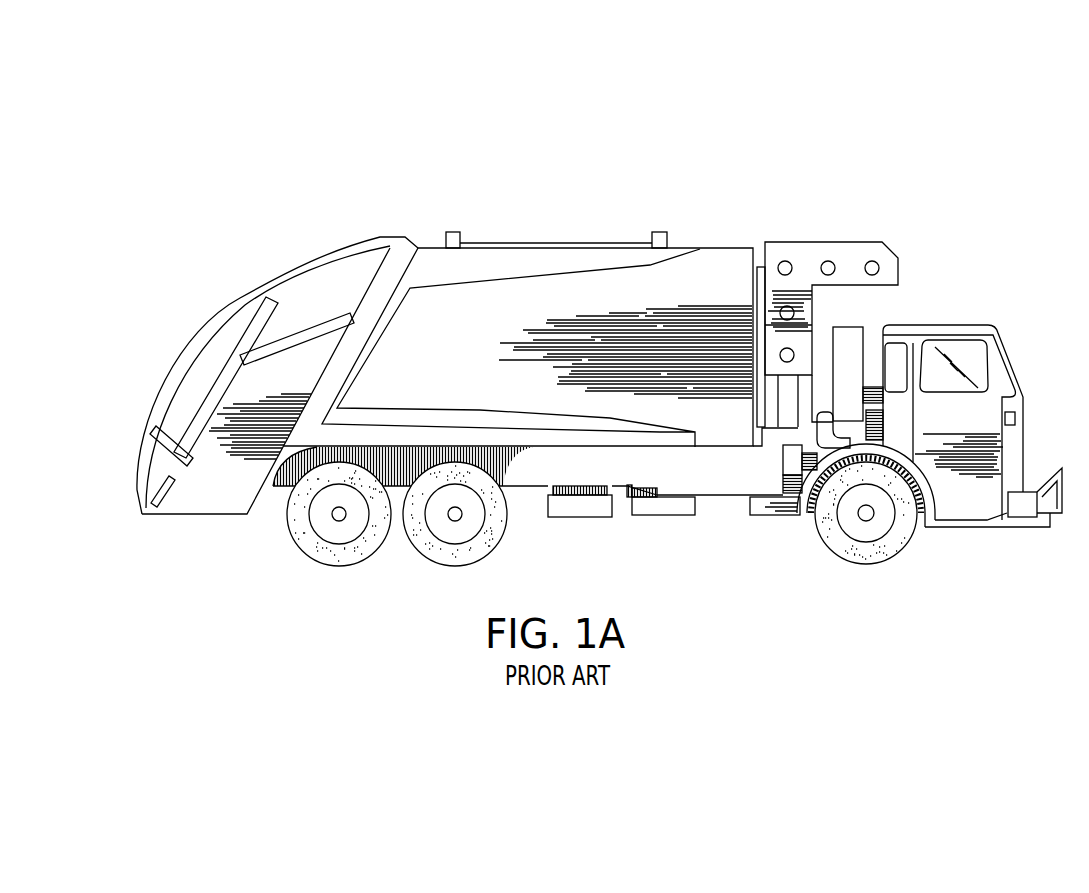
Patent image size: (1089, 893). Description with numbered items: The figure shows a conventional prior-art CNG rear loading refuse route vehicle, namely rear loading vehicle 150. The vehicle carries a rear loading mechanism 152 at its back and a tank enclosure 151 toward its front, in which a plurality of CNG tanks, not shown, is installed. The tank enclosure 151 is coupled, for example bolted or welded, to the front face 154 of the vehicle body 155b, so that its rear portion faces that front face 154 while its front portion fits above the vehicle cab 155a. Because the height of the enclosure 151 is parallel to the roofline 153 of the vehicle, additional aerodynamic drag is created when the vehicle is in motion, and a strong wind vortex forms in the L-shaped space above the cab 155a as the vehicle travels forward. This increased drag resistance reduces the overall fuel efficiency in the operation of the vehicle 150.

The rear loading vehicle 150 is at (684, 143).
The tank enclosure 151 is at (846, 256).
The rear loading mechanism 152 is at (212, 498).
The roofline 153 is at (713, 245).
The front face 154 is at (757, 287).
The vehicle cab 155a is at (956, 500).
The body 155b is at (657, 412).